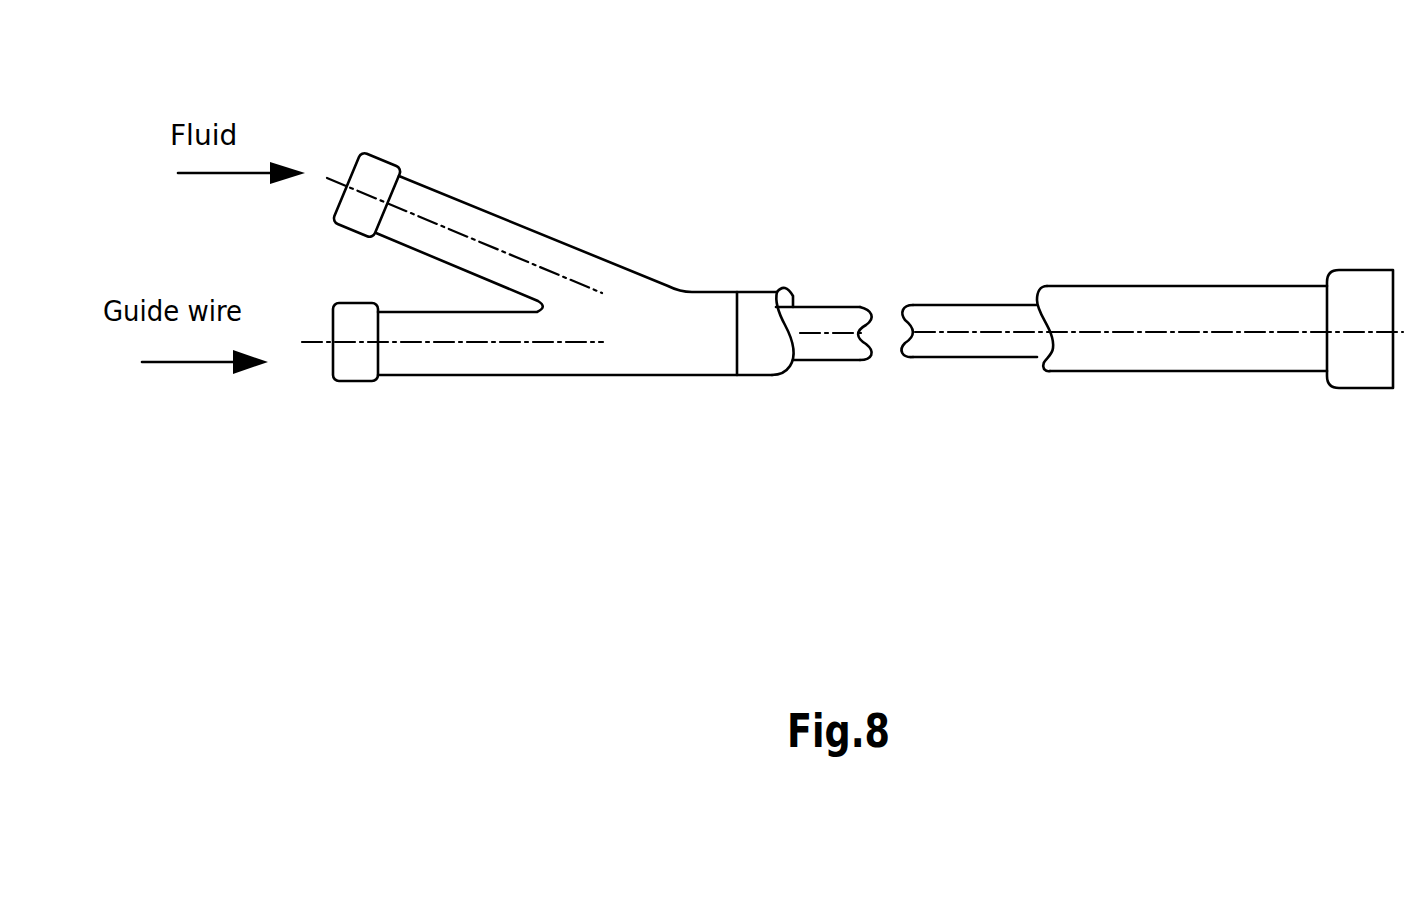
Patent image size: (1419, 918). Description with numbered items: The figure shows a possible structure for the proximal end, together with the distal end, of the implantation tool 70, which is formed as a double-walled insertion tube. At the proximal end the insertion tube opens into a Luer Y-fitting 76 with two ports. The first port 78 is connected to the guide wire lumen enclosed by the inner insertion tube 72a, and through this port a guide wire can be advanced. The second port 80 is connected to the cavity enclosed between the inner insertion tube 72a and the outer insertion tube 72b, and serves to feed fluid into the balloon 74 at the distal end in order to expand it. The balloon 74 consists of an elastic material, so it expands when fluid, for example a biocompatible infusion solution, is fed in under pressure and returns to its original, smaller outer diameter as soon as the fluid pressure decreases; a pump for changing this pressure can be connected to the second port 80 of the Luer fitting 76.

The implantation tool 70 is at (658, 564).
The inner insertion tube 72a is at (940, 345).
The outer insertion tube 72b is at (1255, 348).
The balloon 74 is at (1362, 293).
The Luer Y-fitting 76 is at (676, 337).
The first port 78 is at (360, 367).
The second port 80 is at (368, 175).